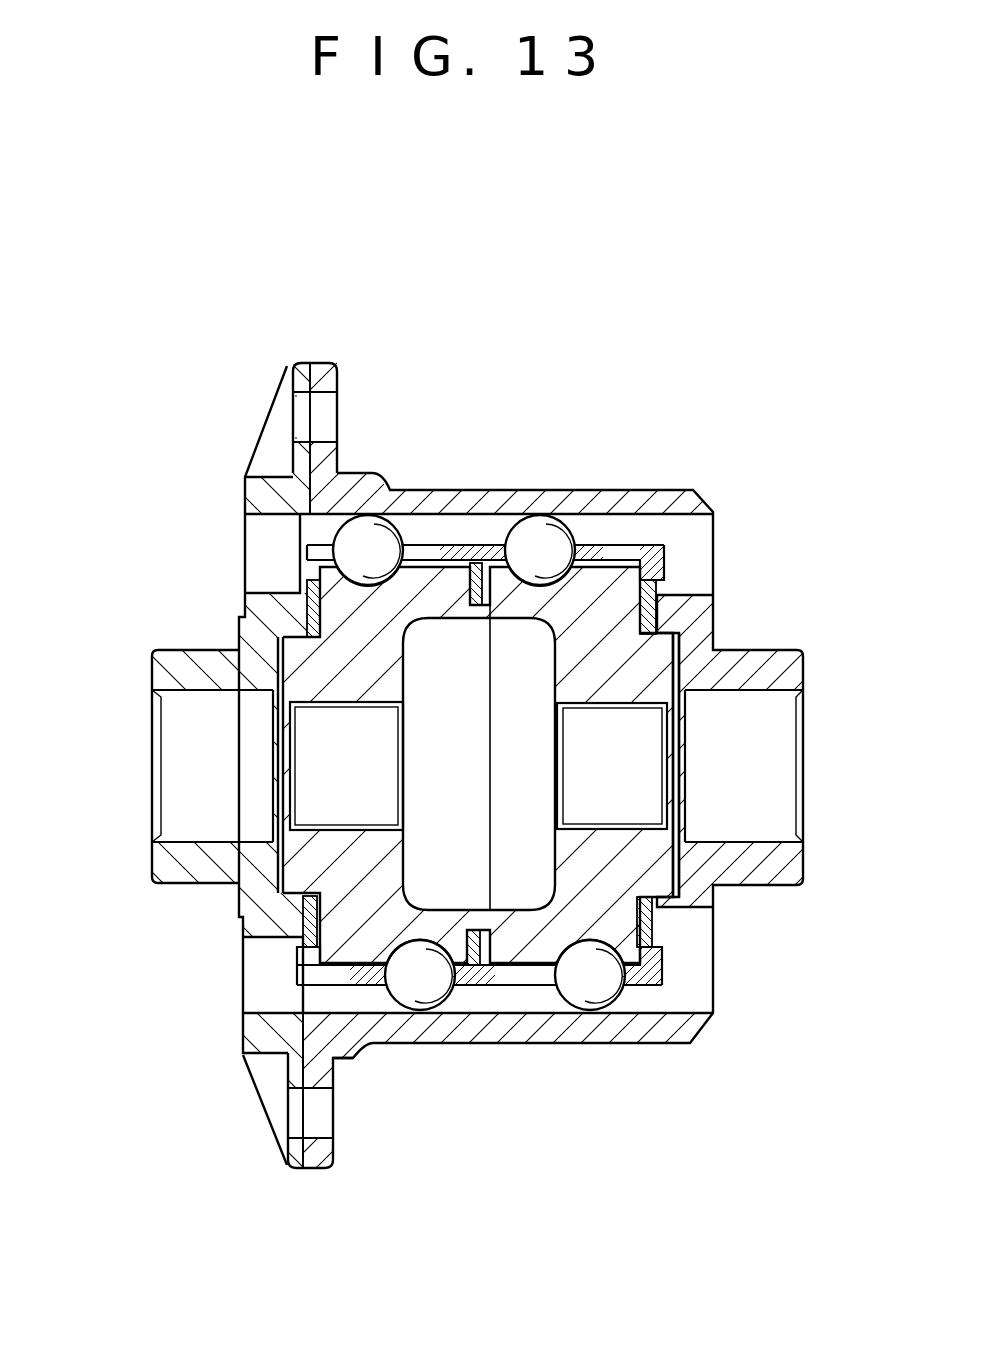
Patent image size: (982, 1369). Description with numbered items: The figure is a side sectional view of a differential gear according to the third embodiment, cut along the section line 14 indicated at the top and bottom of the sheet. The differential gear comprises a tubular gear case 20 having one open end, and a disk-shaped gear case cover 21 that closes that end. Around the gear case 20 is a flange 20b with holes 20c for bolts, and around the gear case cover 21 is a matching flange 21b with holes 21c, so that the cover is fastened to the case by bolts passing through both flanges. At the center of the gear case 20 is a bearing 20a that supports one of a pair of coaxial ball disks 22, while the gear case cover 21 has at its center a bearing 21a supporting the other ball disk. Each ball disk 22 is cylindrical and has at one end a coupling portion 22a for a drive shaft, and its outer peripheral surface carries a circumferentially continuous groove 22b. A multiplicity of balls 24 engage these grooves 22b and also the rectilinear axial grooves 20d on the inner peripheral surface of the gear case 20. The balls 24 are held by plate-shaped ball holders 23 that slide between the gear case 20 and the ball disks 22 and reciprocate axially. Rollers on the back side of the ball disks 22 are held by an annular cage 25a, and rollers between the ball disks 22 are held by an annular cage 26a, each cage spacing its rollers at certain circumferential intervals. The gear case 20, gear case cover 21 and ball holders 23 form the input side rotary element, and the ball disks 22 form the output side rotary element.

The balls 14 is at (437, 284).
The gear case 20 is at (669, 491).
The bearing 20a is at (778, 738).
The flange 20b is at (333, 362).
The holes 20c is at (330, 414).
The grooves 20d is at (455, 532).
The gear case cover 21 is at (245, 495).
The flange hub bore 21a is at (170, 724).
The flange 21b is at (300, 362).
The holes 21c is at (298, 416).
The ball disks 22 is at (652, 880).
The coupling portion 22a is at (313, 773).
The grooves 22b is at (641, 565).
The ball holders 23 is at (587, 544).
The balls 24 is at (368, 535).
The annular cage 25a is at (306, 597).
The annular cage 26a is at (487, 562).